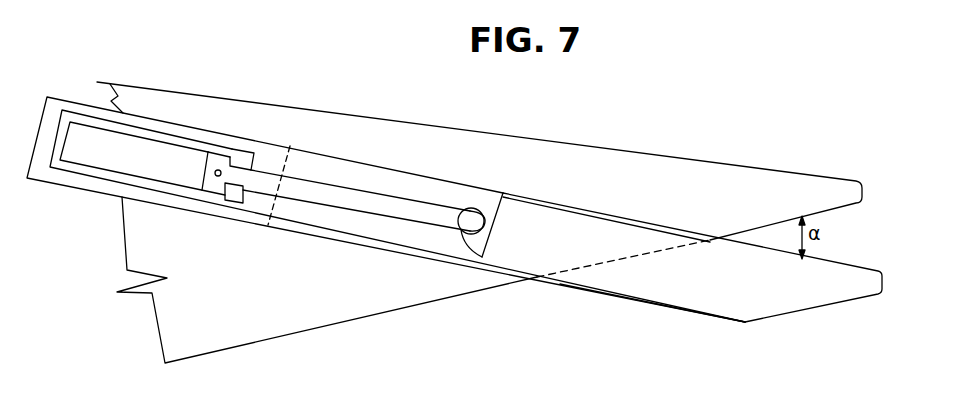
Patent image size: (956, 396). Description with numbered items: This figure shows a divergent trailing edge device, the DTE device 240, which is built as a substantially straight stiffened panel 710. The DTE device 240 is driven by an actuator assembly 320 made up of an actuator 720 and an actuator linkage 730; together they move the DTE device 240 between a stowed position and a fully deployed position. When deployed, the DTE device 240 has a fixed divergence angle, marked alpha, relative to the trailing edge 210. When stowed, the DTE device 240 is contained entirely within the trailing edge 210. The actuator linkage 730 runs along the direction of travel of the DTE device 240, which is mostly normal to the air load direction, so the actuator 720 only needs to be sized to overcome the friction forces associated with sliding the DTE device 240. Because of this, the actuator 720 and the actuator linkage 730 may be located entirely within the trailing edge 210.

The trailing edge 210 is at (730, 163).
The DTE device 240 is at (773, 317).
The actuator assembly 320 is at (252, 169).
The substantially straight stiffened panel 710 is at (687, 312).
The actuator 720 is at (83, 133).
The actuator linkage 730 is at (378, 193).